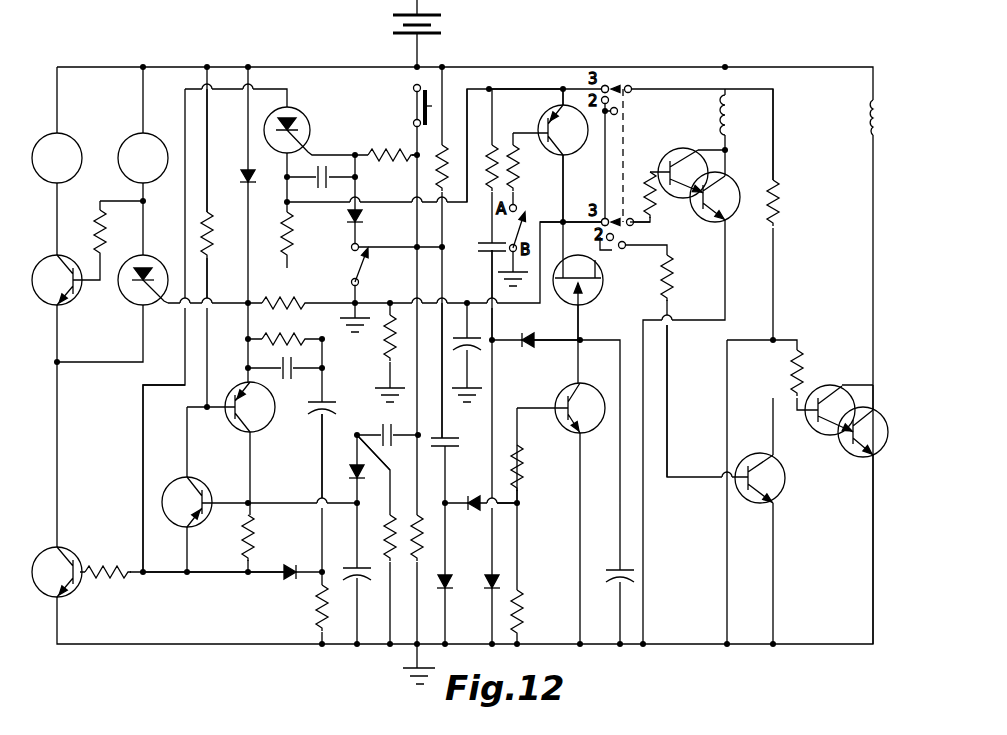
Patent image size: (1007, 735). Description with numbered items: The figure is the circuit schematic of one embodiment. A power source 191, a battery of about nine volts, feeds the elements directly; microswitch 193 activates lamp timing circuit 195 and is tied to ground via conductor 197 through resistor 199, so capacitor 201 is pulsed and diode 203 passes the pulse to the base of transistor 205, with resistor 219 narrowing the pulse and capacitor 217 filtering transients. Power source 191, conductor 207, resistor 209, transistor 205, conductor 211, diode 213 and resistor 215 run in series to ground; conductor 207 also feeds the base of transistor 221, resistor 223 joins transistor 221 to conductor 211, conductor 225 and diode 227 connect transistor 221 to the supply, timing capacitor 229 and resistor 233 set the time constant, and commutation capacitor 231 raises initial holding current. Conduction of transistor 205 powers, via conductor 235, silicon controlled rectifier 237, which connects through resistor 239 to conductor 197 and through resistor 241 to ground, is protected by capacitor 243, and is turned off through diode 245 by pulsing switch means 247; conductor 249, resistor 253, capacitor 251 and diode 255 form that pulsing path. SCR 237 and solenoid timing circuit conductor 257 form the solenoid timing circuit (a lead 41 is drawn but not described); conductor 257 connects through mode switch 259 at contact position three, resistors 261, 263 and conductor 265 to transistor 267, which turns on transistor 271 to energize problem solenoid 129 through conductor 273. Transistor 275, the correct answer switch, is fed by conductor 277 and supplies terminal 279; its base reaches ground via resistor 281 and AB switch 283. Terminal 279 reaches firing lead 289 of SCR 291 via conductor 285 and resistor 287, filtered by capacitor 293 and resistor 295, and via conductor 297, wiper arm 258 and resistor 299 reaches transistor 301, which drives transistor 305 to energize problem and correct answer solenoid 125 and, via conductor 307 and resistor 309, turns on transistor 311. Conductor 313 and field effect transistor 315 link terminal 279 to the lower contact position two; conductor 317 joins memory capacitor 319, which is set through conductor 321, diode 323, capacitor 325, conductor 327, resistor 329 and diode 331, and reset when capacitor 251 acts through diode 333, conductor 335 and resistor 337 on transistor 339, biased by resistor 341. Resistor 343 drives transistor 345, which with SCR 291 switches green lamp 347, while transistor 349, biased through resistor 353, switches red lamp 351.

The conductor line 41 is at (503, 88).
The problem and correct answer solenoid 125 is at (748, 112).
The problem solenoid 129 is at (866, 122).
The power source 191 is at (430, 22).
The microswitch 193 is at (415, 114).
The lamp timing circuit 195 is at (312, 452).
The conductor 197 is at (378, 438).
The resistor 199 is at (416, 560).
The capacitor 201 is at (380, 435).
The diode 203 is at (350, 478).
The transistor 205 is at (215, 470).
The conductor 207 is at (207, 113).
The resistor 209 is at (208, 275).
The conductor 211 is at (228, 575).
The diode 213 is at (284, 576).
The resistor 215 is at (320, 610).
The capacitor 217 is at (354, 560).
The resistor 219 is at (392, 518).
The transistor 221 is at (235, 428).
The resistor 223 is at (252, 528).
The conductor 225 is at (222, 240).
The diode 227 is at (247, 175).
The timing capacitor 229 is at (315, 418).
The commutation capacitor 231 is at (285, 380).
The resistor 233 is at (312, 341).
The conductor 235 is at (143, 408).
The silicon controlled rectifier 237 is at (303, 118).
The resistor 239 is at (378, 150).
The resistor 241 is at (283, 240).
The capacitor 243 is at (318, 192).
The diode 245 is at (362, 222).
The pulsing switch means 247 is at (355, 268).
The conductor 249 is at (432, 395).
The capacitor 251 is at (450, 448).
The resistor 253 is at (436, 175).
The diode 255 is at (450, 582).
The solenoid timing circuit conductor 257 is at (375, 115).
The wiper arm 258 is at (640, 234).
The mode switch 259 is at (630, 100).
The resistor 261 is at (790, 192).
The resistor 263 is at (800, 362).
The conductor 265 is at (775, 92).
The transistor 267 is at (828, 390).
The transistor 271 is at (855, 455).
The conductor 273 is at (872, 556).
The transistor 275 is at (580, 172).
The conductor 277 is at (555, 108).
The terminal 279 is at (522, 222).
The resistor 281 is at (525, 155).
The AB switch 283 is at (504, 232).
The conductor 285 is at (472, 290).
The resistor 287 is at (290, 308).
The firing lead 289 is at (170, 306).
The silicon controlled rectifier 291 is at (137, 304).
The capacitor 293 is at (478, 352).
The resistor 295 is at (388, 362).
The conductor 297 is at (565, 218).
The resistor 299 is at (645, 180).
The transistor 301 is at (678, 150).
The transistor 305 is at (735, 215).
The conductor 307 is at (668, 364).
The resistor 309 is at (672, 290).
The transistor 311 is at (783, 495).
The conductor 313 is at (568, 226).
The field effect transistor 315 is at (590, 296).
The conductor 317 is at (583, 328).
The memory capacitor 319 is at (614, 563).
The conductor 321 is at (565, 347).
The diode 323 is at (560, 331).
The capacitor 325 is at (456, 303).
The conductor 327 is at (558, 110).
The resistor 329 is at (488, 193).
The diode 331 is at (485, 586).
The diode 333 is at (474, 508).
The conductor 335 is at (517, 508).
The resistor 337 is at (520, 468).
The transistor 339 is at (590, 385).
The resistor 341 is at (522, 610).
The resistor 343 is at (115, 578).
The transistor 345 is at (72, 560).
The green lamp 347 is at (135, 140).
The transistor 349 is at (60, 302).
The red lamp 351 is at (70, 133).
The resistor 353 is at (98, 240).